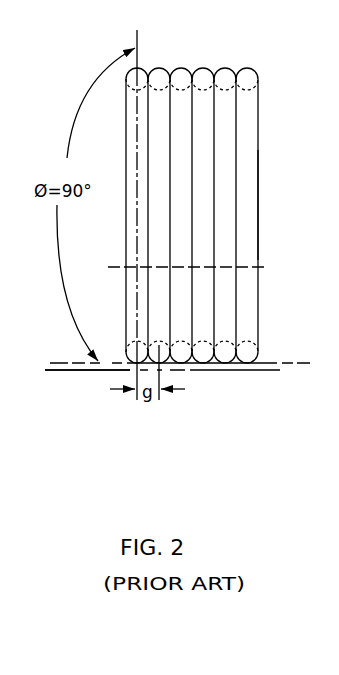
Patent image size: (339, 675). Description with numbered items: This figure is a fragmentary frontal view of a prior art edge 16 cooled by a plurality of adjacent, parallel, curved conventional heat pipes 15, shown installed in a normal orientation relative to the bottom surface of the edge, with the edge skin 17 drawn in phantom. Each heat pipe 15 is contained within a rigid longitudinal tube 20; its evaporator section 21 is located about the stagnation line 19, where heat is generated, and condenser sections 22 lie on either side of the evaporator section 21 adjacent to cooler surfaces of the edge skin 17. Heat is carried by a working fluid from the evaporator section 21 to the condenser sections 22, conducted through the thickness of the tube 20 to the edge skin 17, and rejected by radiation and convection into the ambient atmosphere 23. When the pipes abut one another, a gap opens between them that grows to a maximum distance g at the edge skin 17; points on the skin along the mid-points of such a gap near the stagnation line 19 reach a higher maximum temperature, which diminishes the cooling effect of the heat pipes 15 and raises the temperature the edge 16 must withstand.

The conventional heat pipe 15 is at (260, 103).
The edge 16 is at (266, 242).
The edge skin 17 is at (273, 374).
The stagnation line 19 is at (270, 267).
The tube 20 is at (259, 293).
The evaporator section 21 is at (249, 232).
The condenser section 22 is at (247, 141).
The ambient atmosphere 23 is at (228, 452).